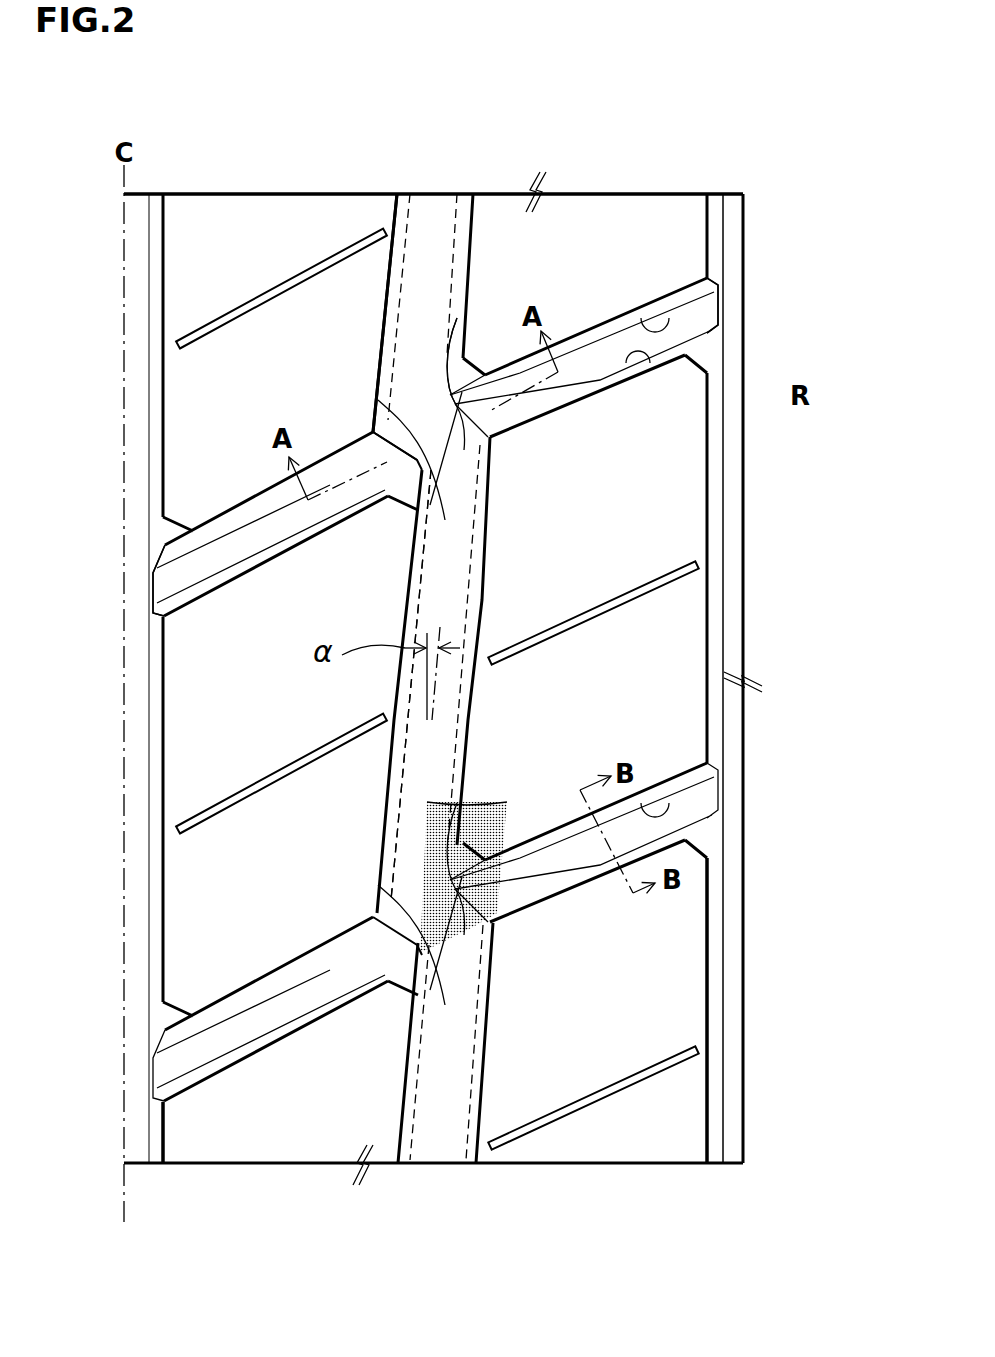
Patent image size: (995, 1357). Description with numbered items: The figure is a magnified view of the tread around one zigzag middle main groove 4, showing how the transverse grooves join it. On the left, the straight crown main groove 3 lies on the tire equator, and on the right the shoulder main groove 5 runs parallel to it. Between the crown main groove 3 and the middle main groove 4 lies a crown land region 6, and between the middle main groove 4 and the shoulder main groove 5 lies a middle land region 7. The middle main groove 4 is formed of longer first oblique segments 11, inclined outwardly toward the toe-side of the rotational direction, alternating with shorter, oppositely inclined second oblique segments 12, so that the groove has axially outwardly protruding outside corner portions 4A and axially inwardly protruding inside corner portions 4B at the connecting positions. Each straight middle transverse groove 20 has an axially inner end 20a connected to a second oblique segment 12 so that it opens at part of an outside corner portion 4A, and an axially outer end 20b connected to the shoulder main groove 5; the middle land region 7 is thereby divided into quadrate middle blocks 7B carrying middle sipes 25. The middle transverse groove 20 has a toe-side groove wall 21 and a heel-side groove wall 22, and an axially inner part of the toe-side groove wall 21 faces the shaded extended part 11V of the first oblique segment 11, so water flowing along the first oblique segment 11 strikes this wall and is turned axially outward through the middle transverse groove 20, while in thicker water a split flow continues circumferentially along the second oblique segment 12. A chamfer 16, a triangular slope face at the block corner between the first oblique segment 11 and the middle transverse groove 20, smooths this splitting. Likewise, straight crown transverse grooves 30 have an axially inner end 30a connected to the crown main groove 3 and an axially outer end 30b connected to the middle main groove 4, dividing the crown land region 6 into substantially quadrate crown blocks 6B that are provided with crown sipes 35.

The crown main groove 3 is at (136, 213).
The middle main groove 4 is at (433, 238).
The outside corner portion 4A is at (506, 448).
The inside corner portion 4B is at (366, 426).
The shoulder main groove 5 is at (731, 226).
The crown land region 6 is at (282, 1170).
The crown block 6B is at (293, 247).
The middle land region 7 is at (592, 1170).
The middle block 7B is at (630, 704).
The first oblique segment 11 is at (440, 606).
The extended part of the first oblique segment 11V is at (485, 815).
The second oblique segment 12 is at (425, 420).
The chamfer 16 is at (455, 395).
The middle transverse groove 20 is at (603, 350).
The axially inner end of middle transverse groove 20a is at (430, 505).
The axially outer end of middle transverse groove 20b is at (719, 305).
The toe-side groove wall 21 is at (654, 330).
The heel-side groove wall 22 is at (638, 372).
The middle sipe 25 is at (650, 591).
The crown transverse groove 30 is at (253, 536).
The axially inner end of crown transverse groove 30a is at (155, 592).
The axially outer end of crown transverse groove 30b is at (408, 437).
The crown sipe 35 is at (246, 794).